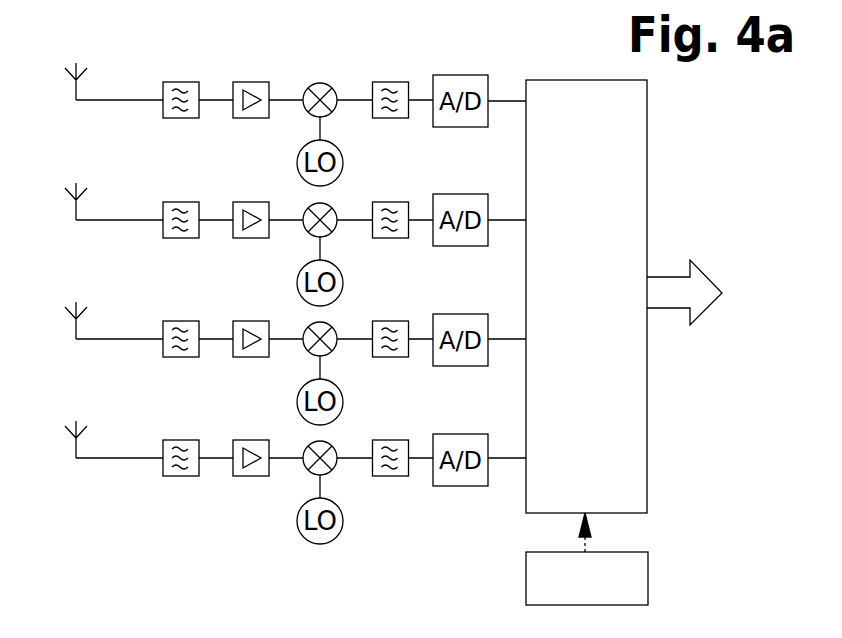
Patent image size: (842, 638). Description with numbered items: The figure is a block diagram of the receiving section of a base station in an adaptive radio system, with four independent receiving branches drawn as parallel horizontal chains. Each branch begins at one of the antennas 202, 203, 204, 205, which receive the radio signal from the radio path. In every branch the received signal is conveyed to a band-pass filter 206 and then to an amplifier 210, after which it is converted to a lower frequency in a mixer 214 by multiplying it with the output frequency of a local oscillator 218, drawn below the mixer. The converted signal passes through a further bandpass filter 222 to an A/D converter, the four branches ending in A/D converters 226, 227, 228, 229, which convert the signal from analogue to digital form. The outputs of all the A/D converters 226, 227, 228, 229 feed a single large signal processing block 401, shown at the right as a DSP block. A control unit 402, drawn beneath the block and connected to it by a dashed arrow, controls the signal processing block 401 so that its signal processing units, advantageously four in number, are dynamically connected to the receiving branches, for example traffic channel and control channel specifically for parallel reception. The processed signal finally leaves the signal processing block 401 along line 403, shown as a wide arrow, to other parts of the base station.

The antenna 202 is at (72, 88).
The antenna 203 is at (72, 208).
The antenna 204 is at (72, 327).
The antenna 205 is at (72, 447).
The band-pass filter 206 is at (162, 107).
The amplifier 210 is at (233, 110).
The mixer 214 is at (320, 83).
The local oscillator 218 is at (297, 163).
The bandpass filter 222 is at (390, 119).
The A/D converter 226 is at (488, 123).
The A/D converter 227 is at (488, 243).
The A/D converter 228 is at (502, 371).
The A/D converter 229 is at (488, 482).
The signal processing block 401 is at (563, 80).
The control unit 402 is at (526, 577).
The line 403 is at (667, 274).